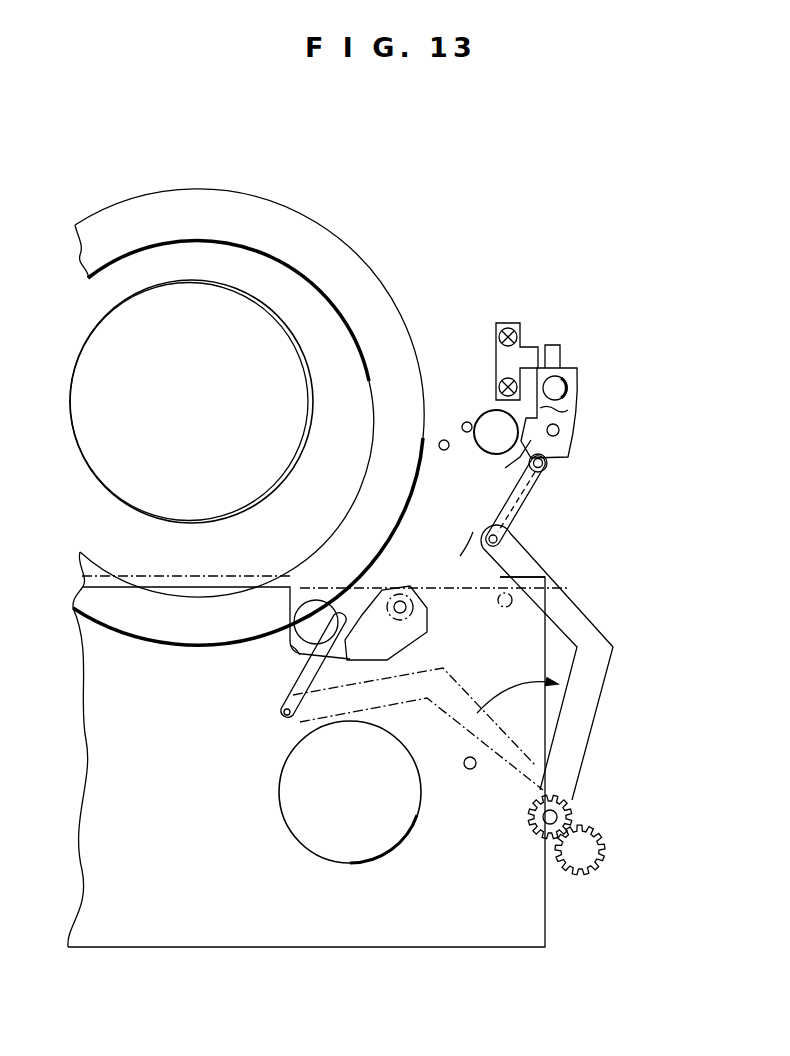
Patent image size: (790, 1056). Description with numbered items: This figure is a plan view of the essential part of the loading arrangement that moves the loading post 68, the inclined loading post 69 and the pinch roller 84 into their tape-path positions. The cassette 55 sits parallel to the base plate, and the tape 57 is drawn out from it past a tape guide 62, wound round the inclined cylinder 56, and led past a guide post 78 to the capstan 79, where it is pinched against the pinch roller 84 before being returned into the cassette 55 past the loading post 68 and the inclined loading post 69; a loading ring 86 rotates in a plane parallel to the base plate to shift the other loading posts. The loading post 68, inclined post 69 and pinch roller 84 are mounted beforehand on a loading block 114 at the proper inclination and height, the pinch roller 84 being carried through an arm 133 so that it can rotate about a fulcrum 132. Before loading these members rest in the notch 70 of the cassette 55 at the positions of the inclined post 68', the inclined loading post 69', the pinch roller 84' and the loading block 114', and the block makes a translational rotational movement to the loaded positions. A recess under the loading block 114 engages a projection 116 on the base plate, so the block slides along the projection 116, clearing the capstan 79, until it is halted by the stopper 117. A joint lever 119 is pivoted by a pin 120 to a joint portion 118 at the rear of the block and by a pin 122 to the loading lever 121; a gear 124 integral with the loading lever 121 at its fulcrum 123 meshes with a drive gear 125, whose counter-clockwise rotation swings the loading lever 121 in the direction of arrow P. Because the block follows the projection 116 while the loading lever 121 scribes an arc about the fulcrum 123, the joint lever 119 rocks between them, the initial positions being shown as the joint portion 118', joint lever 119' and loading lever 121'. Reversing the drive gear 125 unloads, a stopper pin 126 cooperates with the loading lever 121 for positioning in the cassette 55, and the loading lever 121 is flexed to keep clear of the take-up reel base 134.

The cassette 55 is at (247, 925).
The cylinder 56 is at (177, 398).
The tape 57 is at (223, 587).
The tape guide 62 is at (550, 590).
The loading post 68 is at (571, 395).
The inclined post 68' is at (402, 592).
The inclined loading post 69 is at (583, 438).
The inclined loading post 69' is at (395, 582).
The notch 70 is at (496, 645).
The guide post 78 is at (444, 451).
The capstan 79 is at (462, 427).
The pinch roller 84 is at (482, 408).
The pinch roller 84' is at (319, 598).
The loading ring 86 is at (311, 224).
The loading block 114 is at (585, 383).
The loading block 114' is at (432, 628).
The projection 116 is at (472, 532).
The stopper 117 is at (521, 344).
The joint portion 118 is at (578, 462).
The joint portion 118' is at (259, 665).
The joint lever 119 is at (533, 501).
The joint lever 119' is at (281, 666).
The pin 120 is at (543, 468).
The loading lever 121 is at (571, 662).
The loading lever 121' is at (418, 753).
The pin 122 is at (500, 541).
The fulcrum 123 is at (566, 820).
The gear 124 is at (562, 800).
The drive gear 125 is at (592, 847).
The stopper pin 126 is at (468, 770).
The fulcrum 132 is at (507, 466).
The arm 133 is at (569, 412).
The take-up reel base 134 is at (385, 840).
The arrow P is at (517, 688).